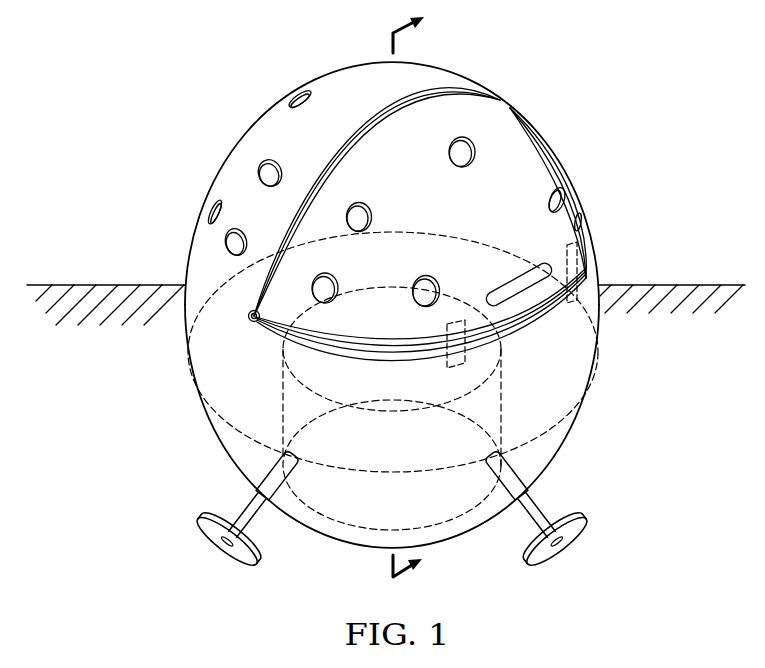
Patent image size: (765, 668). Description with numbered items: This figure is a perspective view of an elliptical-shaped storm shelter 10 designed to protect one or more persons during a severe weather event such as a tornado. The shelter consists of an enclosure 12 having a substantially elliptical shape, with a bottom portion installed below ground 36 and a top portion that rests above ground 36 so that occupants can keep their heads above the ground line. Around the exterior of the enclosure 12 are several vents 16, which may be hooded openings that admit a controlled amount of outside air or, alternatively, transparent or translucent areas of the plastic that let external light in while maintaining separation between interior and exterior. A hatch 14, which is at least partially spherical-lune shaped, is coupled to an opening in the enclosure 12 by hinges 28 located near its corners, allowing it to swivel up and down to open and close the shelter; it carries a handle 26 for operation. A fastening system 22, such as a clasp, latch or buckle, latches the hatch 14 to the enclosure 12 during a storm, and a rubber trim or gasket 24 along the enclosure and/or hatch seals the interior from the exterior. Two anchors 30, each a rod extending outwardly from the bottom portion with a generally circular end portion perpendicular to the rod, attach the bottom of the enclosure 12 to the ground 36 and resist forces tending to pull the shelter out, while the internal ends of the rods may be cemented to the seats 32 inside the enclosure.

The elliptical-shaped shelter 10 is at (158, 158).
The enclosure 12 is at (190, 248).
The hatch 14 is at (547, 155).
The vents 16 is at (263, 168).
The fastening system 22 is at (570, 252).
The rubber trim or gasket 24 is at (388, 105).
The handle 26 is at (522, 296).
The hinges 28 is at (250, 324).
The anchors 30 is at (205, 540).
The seats 32 is at (225, 422).
The ground 36 is at (80, 284).